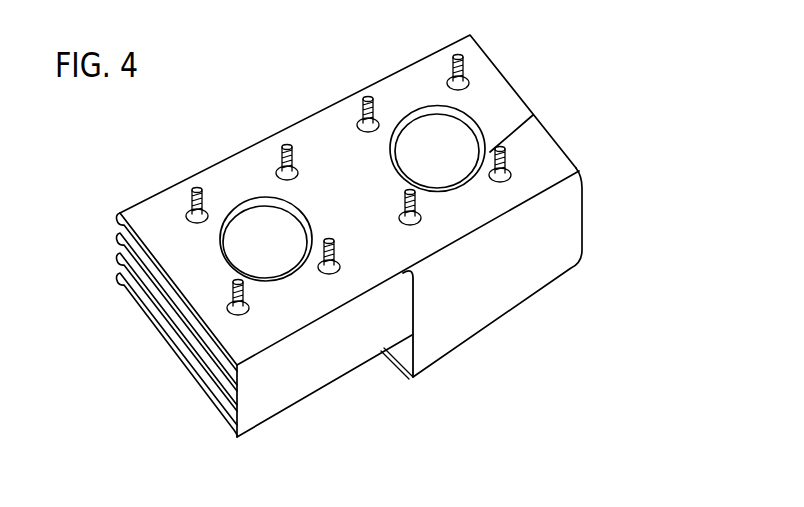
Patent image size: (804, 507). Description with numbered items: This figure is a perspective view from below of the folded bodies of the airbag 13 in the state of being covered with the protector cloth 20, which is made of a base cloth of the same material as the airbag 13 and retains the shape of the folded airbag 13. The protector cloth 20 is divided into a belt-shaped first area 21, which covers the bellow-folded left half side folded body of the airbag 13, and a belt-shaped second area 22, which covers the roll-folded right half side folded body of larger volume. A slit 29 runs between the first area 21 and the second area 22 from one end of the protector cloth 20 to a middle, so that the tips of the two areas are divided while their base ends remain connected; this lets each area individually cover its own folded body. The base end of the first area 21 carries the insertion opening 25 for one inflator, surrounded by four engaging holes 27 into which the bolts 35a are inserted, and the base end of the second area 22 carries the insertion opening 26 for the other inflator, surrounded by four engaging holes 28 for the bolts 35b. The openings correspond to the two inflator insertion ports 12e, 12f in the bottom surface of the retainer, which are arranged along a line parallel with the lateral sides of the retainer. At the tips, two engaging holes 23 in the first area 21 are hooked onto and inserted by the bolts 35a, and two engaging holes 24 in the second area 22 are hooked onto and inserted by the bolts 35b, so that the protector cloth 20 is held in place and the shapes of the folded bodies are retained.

The protector cloth 20 is at (533, 113).
The first area 21 is at (260, 410).
The second area 22 is at (570, 250).
The airbag 13 is at (132, 282).
The slit 29 is at (396, 246).
The insertion opening 25 is at (304, 210).
The insertion opening 26 is at (477, 121).
The inflator insertion port 12e is at (263, 263).
The inflator insertion port 12f is at (450, 173).
The engaging holes 23 is at (240, 316).
The engaging holes 24 is at (422, 222).
The engaging holes 27 is at (187, 215).
The engaging holes 28 is at (358, 124).
The bolts 35a is at (195, 188).
The bolts 35b is at (458, 57).